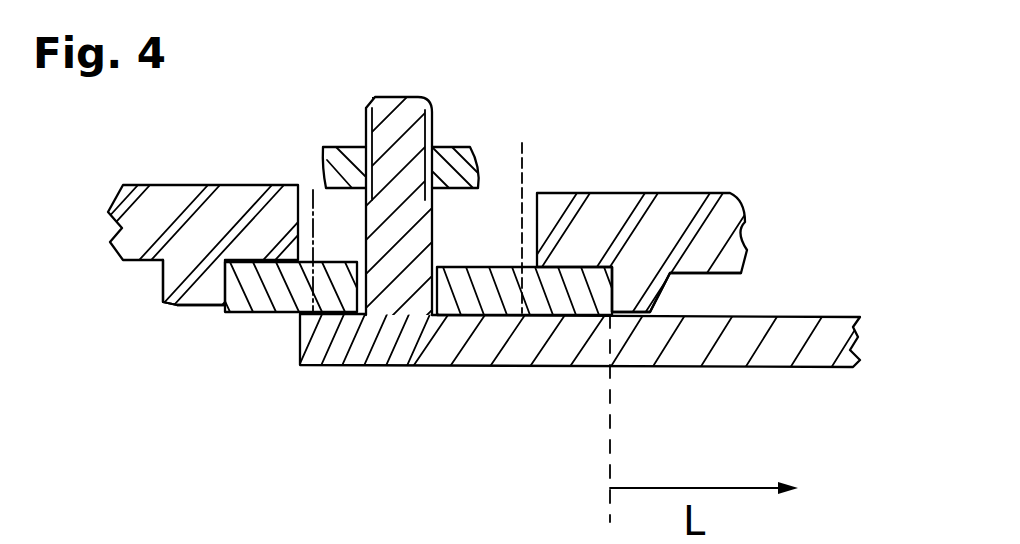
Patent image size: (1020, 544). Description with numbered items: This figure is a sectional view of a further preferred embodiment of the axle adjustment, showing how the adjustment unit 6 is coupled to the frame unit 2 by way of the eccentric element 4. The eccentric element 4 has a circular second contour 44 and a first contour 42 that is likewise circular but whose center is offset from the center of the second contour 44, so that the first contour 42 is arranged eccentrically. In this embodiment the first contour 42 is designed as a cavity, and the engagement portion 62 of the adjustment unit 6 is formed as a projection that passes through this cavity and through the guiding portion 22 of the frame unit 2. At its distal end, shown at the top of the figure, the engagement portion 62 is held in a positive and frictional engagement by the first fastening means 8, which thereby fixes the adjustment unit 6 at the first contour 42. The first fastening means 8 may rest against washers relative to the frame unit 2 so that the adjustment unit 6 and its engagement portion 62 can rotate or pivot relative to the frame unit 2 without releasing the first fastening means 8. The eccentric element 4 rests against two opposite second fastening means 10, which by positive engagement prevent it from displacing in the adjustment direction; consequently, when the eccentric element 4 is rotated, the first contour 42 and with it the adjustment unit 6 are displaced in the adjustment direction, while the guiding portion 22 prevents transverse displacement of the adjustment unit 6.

The frame unit 2 is at (718, 223).
The eccentric element 4 is at (277, 303).
The adjustment unit 6 is at (813, 353).
The first fastening means 8 is at (322, 152).
The second fastening means 10 is at (190, 273).
The guiding portion 22 is at (503, 228).
The first contour 42 is at (445, 272).
The second contour 44 is at (220, 312).
The engagement portion 62 is at (402, 160).